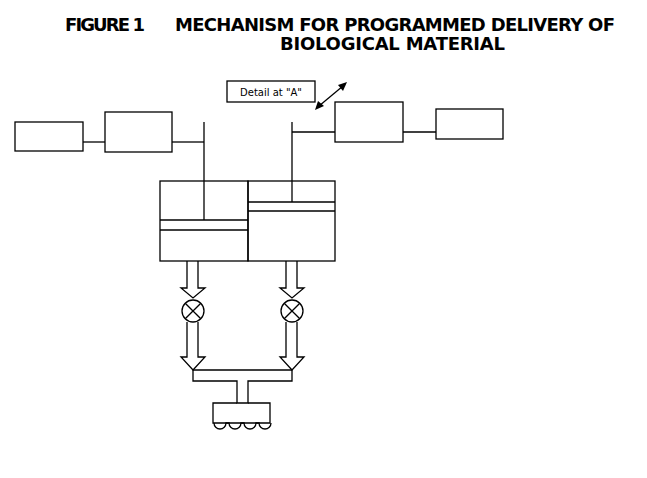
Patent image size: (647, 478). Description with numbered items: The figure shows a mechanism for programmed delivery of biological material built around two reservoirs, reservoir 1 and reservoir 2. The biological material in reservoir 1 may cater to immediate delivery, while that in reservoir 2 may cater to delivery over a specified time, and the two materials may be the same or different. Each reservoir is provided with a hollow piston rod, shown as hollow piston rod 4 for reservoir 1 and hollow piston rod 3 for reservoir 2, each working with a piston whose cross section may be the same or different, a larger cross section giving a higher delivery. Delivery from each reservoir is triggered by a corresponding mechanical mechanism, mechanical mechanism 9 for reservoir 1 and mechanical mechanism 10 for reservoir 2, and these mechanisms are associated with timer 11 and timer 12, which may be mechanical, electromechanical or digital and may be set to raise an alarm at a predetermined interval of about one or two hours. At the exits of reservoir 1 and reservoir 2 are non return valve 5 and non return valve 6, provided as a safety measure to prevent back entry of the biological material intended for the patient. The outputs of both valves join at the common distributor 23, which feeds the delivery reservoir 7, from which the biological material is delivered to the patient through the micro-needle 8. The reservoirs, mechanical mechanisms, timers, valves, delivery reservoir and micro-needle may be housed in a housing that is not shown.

The timer 11 is at (49, 136).
The mechanical mechanism 9 is at (143, 132).
The hollow piston rod 4 is at (115, 171).
The mechanical mechanism 10 is at (364, 122).
The timer 12 is at (469, 124).
The hollow piston rod 3 is at (381, 162).
The reservoir 1 is at (137, 221).
The reservoir 2 is at (370, 221).
The non return valve 5 is at (138, 315).
The non return valve 6 is at (347, 315).
The common distributor 23 is at (298, 377).
The delivery reservoir 7 is at (308, 412).
The micro-needle 8 is at (346, 441).